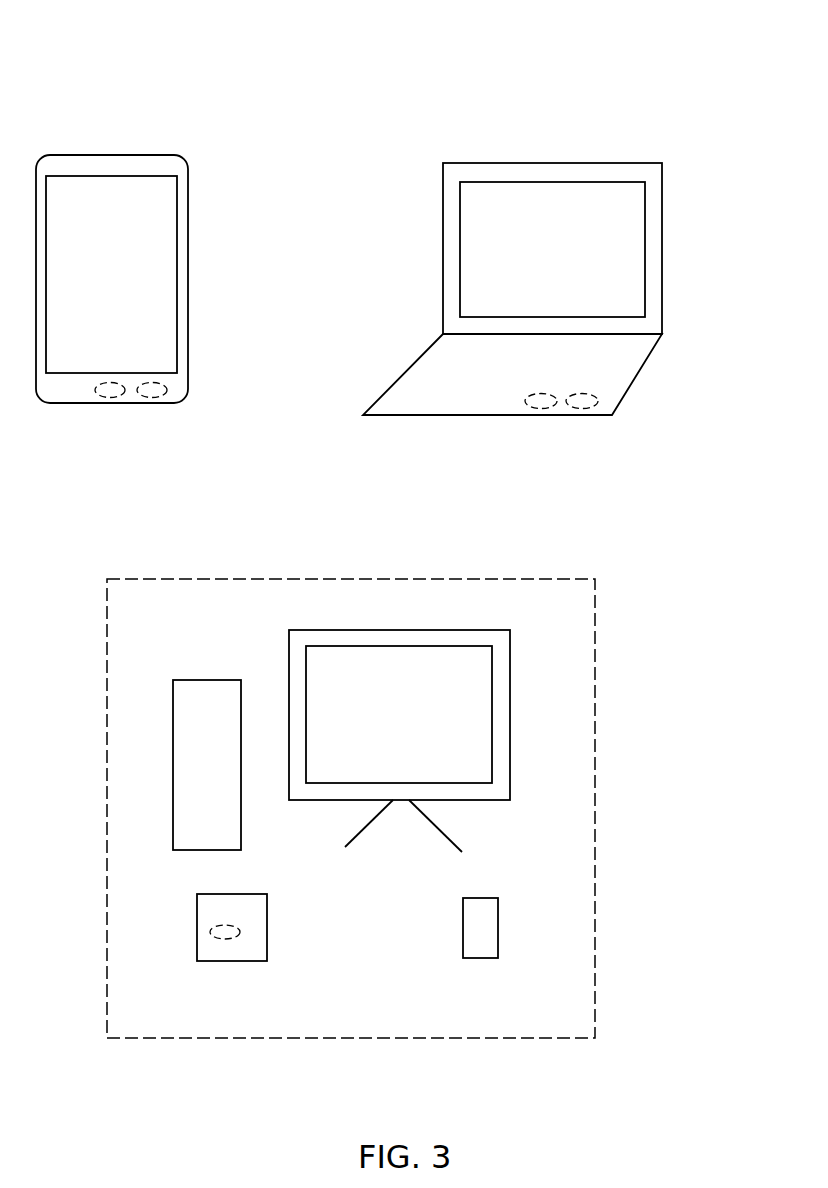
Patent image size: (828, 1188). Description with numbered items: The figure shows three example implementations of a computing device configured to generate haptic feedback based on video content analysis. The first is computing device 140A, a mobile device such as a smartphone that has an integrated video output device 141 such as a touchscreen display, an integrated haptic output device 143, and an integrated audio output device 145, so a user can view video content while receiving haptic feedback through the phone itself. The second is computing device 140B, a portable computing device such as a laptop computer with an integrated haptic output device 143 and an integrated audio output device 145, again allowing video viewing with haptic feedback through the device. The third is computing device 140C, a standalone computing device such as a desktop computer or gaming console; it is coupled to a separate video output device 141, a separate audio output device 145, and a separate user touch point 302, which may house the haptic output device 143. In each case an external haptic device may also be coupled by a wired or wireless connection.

The computing device 140A is at (73, 120).
The computing device 140B is at (512, 125).
The computing device 140C is at (212, 680).
The video output device 141 is at (178, 242).
The haptic output device 143 is at (152, 398).
The audio output device 145 is at (110, 398).
The user touch point 302 is at (267, 927).